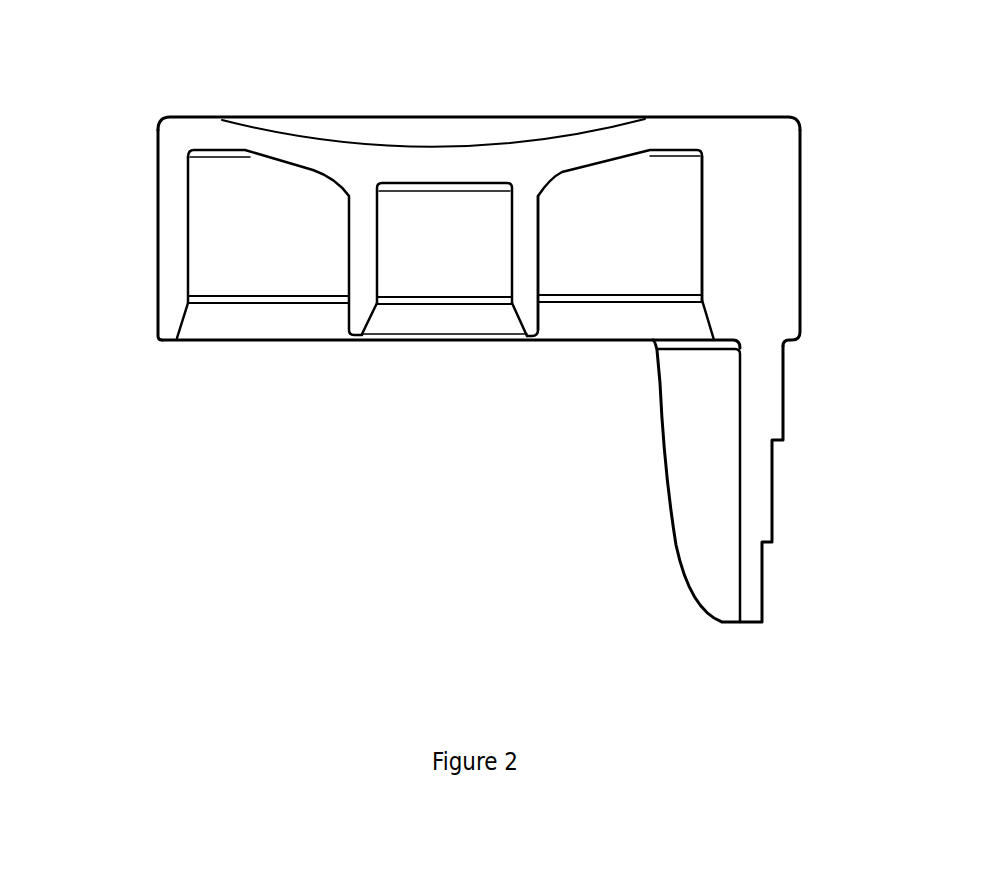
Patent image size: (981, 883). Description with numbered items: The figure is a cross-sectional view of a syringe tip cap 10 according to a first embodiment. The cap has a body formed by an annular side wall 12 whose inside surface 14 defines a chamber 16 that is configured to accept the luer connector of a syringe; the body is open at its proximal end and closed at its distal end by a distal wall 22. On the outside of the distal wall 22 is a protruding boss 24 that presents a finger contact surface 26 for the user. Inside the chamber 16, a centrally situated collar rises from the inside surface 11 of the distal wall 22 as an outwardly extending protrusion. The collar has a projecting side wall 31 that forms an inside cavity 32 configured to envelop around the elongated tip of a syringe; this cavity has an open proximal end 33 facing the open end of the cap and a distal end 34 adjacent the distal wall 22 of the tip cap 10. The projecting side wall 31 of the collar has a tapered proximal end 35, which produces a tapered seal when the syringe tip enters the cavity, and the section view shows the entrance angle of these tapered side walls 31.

The syringe tip cap 10 is at (184, 52).
The inside surface 11 is at (314, 170).
The annular side wall 12 is at (158, 340).
The inside surface 14 is at (188, 216).
The chamber 16 is at (614, 196).
The distal wall 22 is at (450, 114).
The protruding boss 24 is at (798, 213).
The finger contact surface 26 is at (760, 496).
The projecting side wall 31 is at (507, 262).
The inside cavity 32 is at (472, 204).
The open proximal end 33 is at (300, 343).
The distal end 34 is at (178, 112).
The tapered proximal end 35 is at (170, 320).